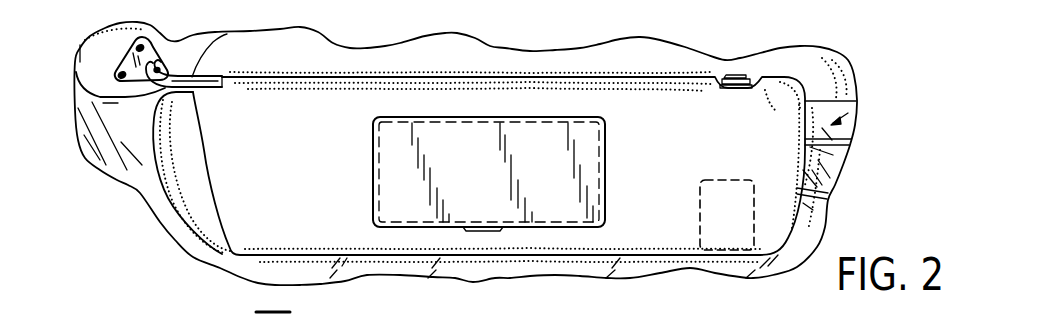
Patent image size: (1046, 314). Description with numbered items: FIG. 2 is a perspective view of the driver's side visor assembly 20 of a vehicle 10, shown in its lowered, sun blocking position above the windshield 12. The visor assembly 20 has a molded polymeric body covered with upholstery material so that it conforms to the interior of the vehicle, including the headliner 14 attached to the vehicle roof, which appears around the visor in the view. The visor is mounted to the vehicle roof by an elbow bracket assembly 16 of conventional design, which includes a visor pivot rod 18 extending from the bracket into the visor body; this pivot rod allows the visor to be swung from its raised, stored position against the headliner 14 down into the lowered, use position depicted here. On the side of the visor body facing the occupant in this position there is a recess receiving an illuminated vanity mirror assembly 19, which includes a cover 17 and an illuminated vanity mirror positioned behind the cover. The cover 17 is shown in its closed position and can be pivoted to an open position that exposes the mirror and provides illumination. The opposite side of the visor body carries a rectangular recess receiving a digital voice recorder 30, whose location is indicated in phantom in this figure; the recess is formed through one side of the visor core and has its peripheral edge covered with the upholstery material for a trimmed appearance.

The vehicle 10 is at (88, 43).
The windshield 12 is at (814, 242).
The headliner 14 is at (326, 52).
The elbow bracket assembly 16 is at (160, 47).
The cover 17 is at (390, 170).
The visor pivot rod 18 is at (192, 73).
The illuminated vanity mirror assembly 19 is at (604, 163).
The visor assembly 20 is at (378, 78).
The digital voice recorder 30 is at (741, 180).